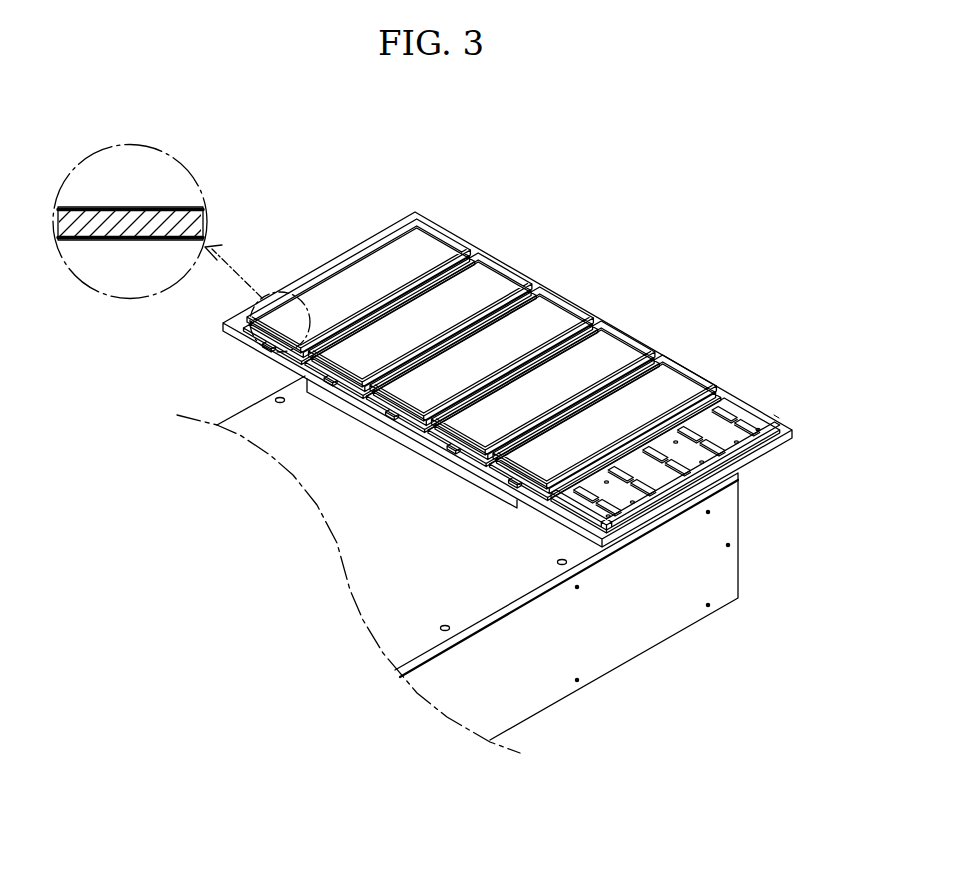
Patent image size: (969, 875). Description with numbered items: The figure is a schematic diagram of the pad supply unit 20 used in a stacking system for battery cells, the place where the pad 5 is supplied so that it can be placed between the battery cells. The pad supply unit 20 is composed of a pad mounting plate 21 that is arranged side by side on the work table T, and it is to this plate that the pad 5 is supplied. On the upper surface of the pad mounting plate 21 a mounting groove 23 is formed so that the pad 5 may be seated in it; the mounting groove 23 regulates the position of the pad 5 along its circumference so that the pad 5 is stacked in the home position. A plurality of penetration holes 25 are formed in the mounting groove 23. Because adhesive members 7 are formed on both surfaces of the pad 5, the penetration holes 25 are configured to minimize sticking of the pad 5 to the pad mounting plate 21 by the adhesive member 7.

The pad 5 is at (193, 222).
The adhesive member 7 is at (186, 209).
The pad supply unit 20 is at (619, 289).
The pad mounting plate 21 is at (718, 397).
The mounting groove 23 is at (741, 443).
The penetration hole 25 is at (741, 446).
The work table T is at (500, 578).